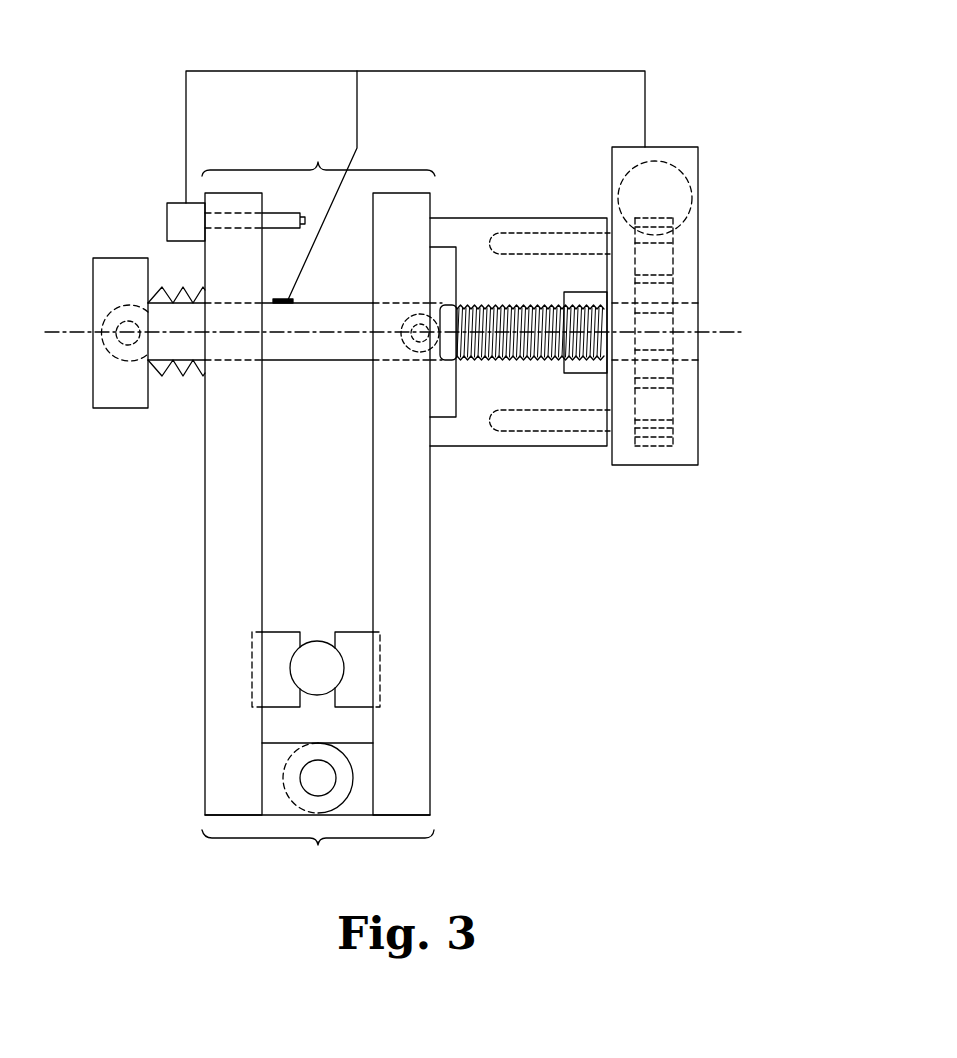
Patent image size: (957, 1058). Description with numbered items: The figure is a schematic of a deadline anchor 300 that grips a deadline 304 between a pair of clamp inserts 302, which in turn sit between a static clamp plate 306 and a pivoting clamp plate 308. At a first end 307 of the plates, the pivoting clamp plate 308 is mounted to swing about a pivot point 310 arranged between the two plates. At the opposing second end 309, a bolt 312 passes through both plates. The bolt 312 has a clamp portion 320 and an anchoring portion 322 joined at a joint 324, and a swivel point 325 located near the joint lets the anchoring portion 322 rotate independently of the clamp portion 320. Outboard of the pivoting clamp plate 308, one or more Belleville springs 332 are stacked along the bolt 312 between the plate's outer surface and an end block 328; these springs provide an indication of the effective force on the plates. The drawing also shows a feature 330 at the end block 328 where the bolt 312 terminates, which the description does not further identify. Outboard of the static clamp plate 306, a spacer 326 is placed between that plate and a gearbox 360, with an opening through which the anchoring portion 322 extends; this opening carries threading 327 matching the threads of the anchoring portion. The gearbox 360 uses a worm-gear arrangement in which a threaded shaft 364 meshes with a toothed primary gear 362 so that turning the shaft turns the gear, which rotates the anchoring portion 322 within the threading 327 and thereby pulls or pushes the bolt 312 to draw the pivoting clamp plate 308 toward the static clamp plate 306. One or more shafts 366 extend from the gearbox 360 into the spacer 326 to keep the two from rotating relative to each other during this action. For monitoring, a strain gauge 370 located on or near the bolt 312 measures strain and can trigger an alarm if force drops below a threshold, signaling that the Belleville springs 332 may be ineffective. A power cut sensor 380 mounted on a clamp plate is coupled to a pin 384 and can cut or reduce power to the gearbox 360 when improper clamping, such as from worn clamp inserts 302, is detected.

The deadline anchor 300 is at (858, 84).
The clamp inserts 302 is at (300, 632).
The deadline 304 is at (307, 668).
The static clamp plate 306 is at (420, 800).
The first end 307 is at (318, 844).
The pivoting clamp plate 308 is at (213, 798).
The second end 309 is at (318, 157).
The pivot point 310 is at (318, 778).
The bolt 312 is at (290, 361).
The clamp portion 320 is at (335, 317).
The anchoring portion 322 is at (463, 347).
The joint 324 is at (425, 345).
The swivel point 325 is at (448, 365).
The spacer 326 is at (462, 217).
The threading 327 is at (585, 377).
The end block 328 is at (102, 272).
The pivot 330 is at (128, 333).
The Belleville springs 332 is at (162, 290).
The gearbox 360 is at (680, 145).
The primary gear 362 is at (673, 283).
The threaded shaft 364 is at (684, 173).
The shafts 366 is at (532, 243).
The strain gauge 370 is at (285, 298).
The power cut sensor 380 is at (177, 208).
The pin 384 is at (277, 215).